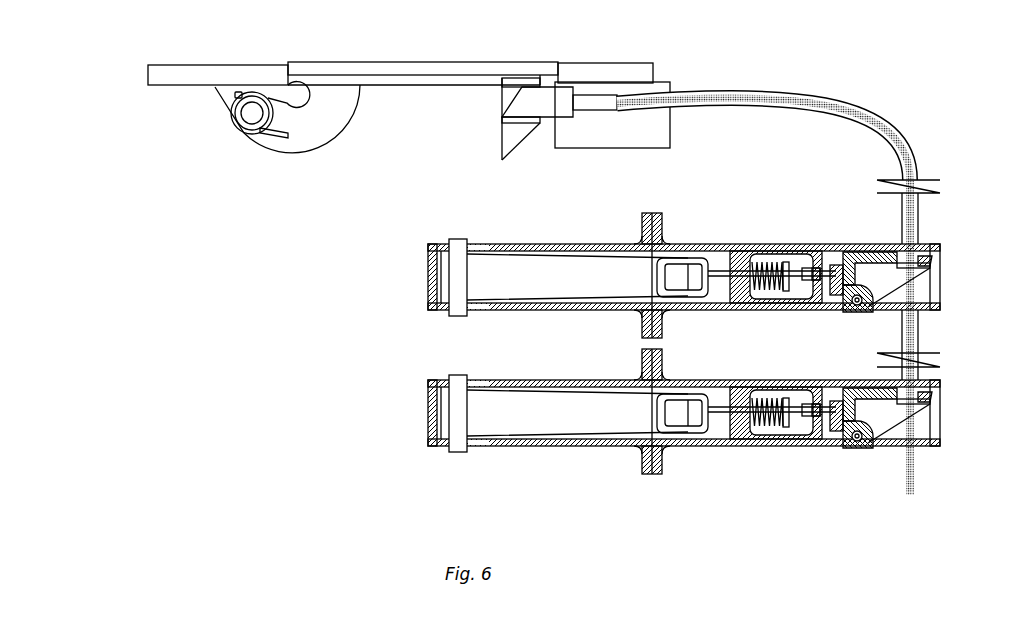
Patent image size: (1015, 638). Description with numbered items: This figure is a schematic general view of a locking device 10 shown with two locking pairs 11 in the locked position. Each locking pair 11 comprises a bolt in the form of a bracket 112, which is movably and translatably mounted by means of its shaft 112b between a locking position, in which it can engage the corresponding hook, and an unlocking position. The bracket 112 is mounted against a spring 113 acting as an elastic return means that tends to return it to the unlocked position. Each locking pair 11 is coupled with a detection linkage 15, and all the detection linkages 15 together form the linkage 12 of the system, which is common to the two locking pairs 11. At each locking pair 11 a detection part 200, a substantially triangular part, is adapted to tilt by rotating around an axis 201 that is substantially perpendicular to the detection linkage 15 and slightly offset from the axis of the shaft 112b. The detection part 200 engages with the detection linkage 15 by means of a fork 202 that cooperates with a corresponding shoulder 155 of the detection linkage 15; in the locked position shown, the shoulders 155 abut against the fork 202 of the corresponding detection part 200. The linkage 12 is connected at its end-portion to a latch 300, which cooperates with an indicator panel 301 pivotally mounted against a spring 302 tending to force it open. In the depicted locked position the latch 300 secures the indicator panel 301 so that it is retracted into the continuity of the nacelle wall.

The locking device 10 is at (856, 84).
The locking pair 11 is at (410, 275).
The linkage 12 is at (898, 147).
The detection linkage 15 is at (913, 290).
The bracket 112 is at (725, 278).
The shaft 112b is at (808, 281).
The spring 113 is at (770, 257).
The shoulder 155 is at (913, 272).
The detection part 200 is at (866, 264).
The axis 201 is at (857, 303).
The fork 202 is at (924, 256).
The latch 300 is at (562, 98).
The indicator panel 301 is at (428, 70).
The spring 302 is at (263, 134).